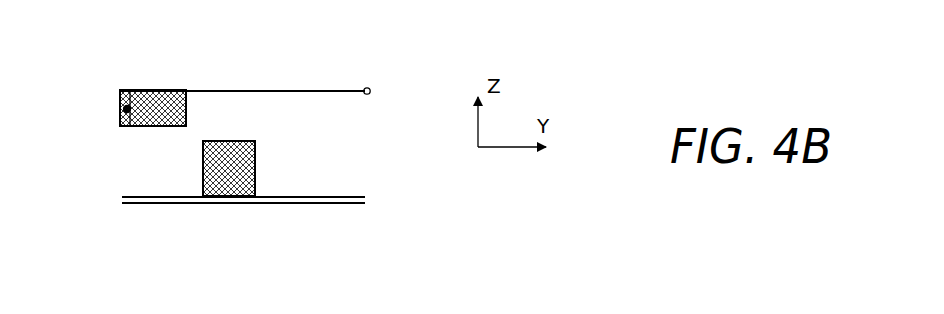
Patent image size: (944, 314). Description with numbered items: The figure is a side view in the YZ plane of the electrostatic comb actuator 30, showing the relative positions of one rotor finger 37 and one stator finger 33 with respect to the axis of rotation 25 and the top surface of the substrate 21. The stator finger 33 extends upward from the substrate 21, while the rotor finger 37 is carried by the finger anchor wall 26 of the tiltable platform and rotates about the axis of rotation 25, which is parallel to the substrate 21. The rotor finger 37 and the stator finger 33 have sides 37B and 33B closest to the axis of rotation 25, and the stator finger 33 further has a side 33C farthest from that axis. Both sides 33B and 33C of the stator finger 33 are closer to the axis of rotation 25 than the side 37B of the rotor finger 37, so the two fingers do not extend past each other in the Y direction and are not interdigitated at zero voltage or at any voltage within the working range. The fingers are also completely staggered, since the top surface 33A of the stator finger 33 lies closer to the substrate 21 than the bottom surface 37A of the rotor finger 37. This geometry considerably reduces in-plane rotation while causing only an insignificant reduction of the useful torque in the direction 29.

The substrate 21 is at (345, 195).
The axis of rotation 25 is at (369, 95).
The finger anchor wall 26 is at (124, 109).
The direction 29 is at (352, 68).
The electrostatic comb actuator 30 is at (455, 187).
The stator finger 33 is at (233, 183).
The top surface of the stator finger 33A is at (231, 139).
The side of the stator finger closest to the axis of rotation 33B is at (258, 170).
The side of the stator finger farthest from the axis of rotation 33C is at (200, 181).
The rotor finger 37 is at (178, 94).
The bottom surface of the rotor finger 37A is at (137, 131).
The side of the rotor finger closest to the axis of rotation 37B is at (190, 102).